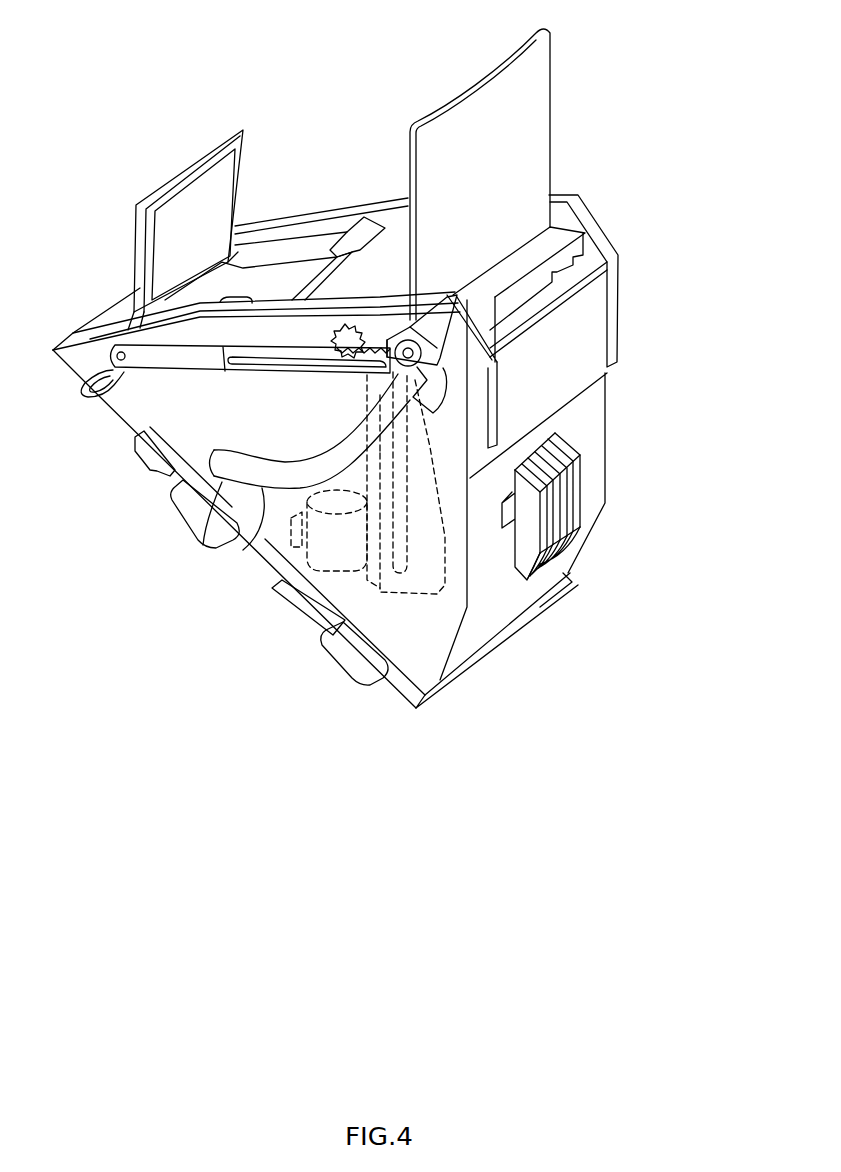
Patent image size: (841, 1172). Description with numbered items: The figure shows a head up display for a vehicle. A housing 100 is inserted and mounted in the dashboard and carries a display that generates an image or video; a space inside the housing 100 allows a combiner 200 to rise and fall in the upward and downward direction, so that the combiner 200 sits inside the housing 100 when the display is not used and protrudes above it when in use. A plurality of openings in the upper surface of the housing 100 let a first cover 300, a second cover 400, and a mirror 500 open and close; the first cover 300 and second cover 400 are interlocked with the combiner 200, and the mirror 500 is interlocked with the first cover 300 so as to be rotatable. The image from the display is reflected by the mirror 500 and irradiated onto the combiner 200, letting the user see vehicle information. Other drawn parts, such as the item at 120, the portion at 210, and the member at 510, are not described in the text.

The housing 100 is at (270, 235).
The mount block 120 is at (267, 523).
The combiner 200 is at (540, 103).
The hidden connector portion 210 is at (408, 607).
The first cover 300 is at (387, 270).
The second cover 400 is at (600, 303).
The mirror 500 is at (187, 167).
The rack bar 510 is at (242, 362).